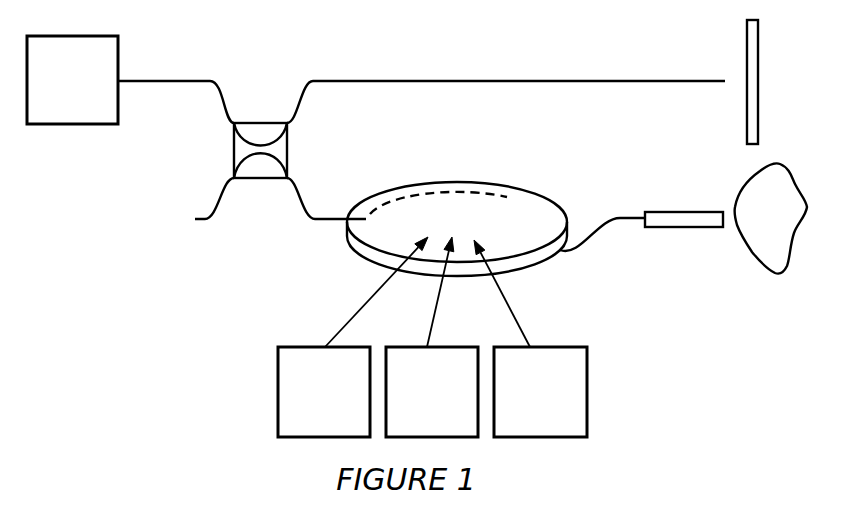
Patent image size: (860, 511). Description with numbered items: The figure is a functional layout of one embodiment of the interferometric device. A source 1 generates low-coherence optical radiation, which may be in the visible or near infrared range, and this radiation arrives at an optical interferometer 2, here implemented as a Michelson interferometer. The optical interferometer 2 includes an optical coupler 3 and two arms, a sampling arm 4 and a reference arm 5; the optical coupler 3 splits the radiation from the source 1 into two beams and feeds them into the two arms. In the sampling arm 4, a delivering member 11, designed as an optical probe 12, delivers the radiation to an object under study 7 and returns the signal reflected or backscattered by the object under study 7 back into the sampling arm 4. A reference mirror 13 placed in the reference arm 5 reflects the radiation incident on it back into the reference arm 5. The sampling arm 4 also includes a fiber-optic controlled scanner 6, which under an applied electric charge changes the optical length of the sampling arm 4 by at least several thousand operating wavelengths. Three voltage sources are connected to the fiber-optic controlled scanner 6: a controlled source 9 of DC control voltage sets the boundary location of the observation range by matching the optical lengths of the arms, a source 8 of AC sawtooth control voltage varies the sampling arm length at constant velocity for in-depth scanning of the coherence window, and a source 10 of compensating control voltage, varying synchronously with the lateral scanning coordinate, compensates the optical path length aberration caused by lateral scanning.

The source 1 is at (72, 80).
The optical interferometer 2 is at (218, 61).
The optical coupler 3 is at (241, 151).
The sampling arm 4 is at (602, 258).
The reference arm 5 is at (506, 82).
The fiber-optic controlled scanner 6 is at (457, 209).
The object under study 7 is at (771, 245).
The source of AC control voltage 8 is at (353, 337).
The controlled source of control DC voltage 9 is at (432, 337).
The source of compensating control voltage 10 is at (530, 338).
The delivering member 11 is at (683, 241).
The optical probe 12 is at (683, 241).
The reference mirror 13 is at (776, 82).